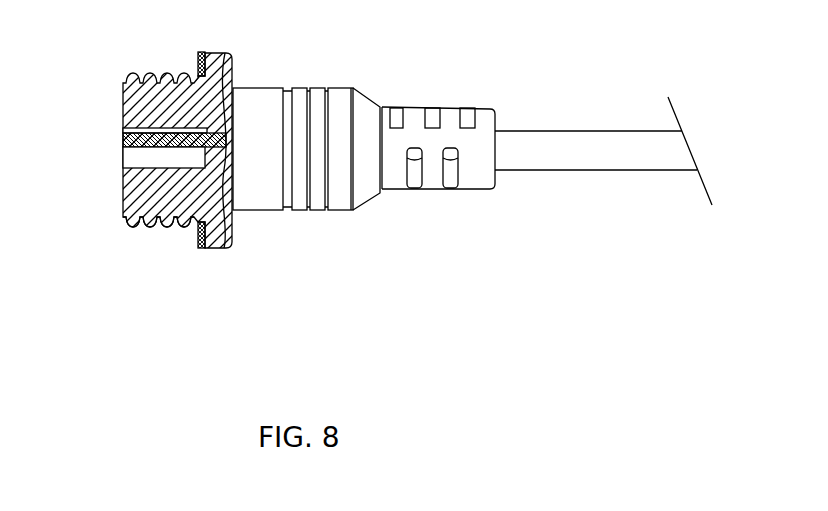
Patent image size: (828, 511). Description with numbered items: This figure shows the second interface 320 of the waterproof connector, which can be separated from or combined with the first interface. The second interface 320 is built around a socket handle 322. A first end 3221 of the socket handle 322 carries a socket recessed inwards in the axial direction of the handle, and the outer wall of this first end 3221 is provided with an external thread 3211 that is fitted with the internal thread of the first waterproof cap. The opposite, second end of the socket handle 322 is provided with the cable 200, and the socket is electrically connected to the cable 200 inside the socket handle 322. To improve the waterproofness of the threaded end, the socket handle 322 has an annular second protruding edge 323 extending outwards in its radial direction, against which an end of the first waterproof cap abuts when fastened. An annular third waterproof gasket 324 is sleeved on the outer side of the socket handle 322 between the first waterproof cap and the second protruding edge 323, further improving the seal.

The first end of the socket handle 3221 is at (122, 103).
The external thread 3211 is at (153, 221).
The third waterproof gasket 324 is at (198, 57).
The second protruding edge 323 is at (215, 249).
The socket handle 322 is at (338, 88).
The second interface 320 is at (385, 282).
The cable 200 is at (564, 172).